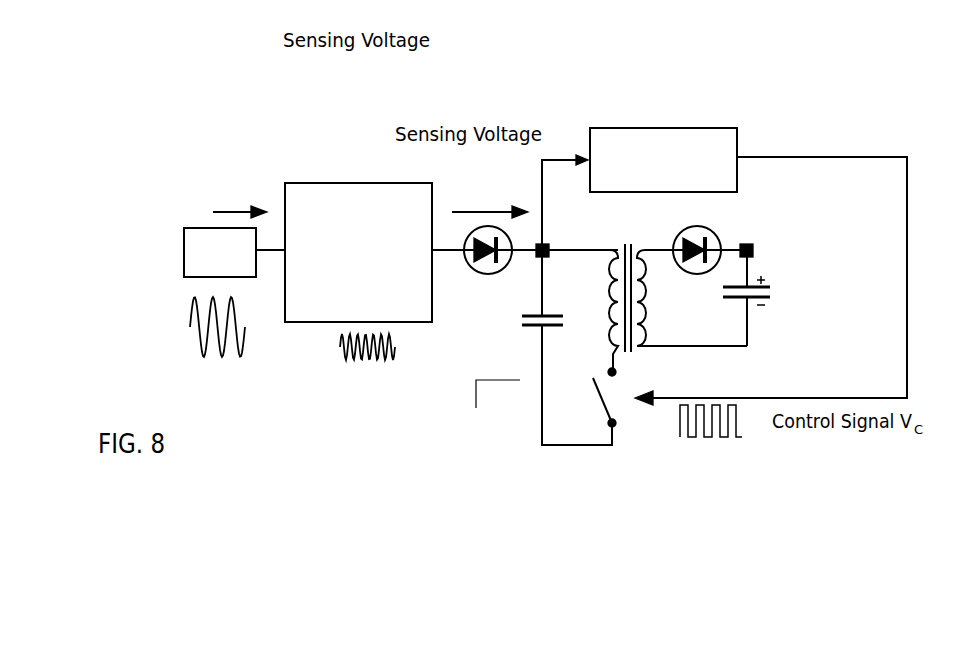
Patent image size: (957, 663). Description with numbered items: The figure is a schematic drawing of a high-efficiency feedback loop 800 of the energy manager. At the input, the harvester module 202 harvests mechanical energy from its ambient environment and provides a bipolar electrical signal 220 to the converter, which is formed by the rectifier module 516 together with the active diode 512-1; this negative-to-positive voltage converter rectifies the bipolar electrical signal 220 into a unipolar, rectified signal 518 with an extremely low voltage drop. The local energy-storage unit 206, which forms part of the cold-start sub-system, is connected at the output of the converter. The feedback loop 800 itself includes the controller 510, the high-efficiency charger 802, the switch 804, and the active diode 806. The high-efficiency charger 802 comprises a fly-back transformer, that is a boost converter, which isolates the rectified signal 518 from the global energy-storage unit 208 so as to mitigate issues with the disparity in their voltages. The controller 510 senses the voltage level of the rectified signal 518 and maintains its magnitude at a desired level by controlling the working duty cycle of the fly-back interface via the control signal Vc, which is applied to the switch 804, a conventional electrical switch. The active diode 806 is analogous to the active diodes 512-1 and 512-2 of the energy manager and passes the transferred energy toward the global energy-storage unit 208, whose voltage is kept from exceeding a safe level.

The feedback loop 800 is at (170, 106).
The harvester module 202 is at (237, 264).
The bipolar electrical signal 220 is at (240, 199).
The rectifier module 516 is at (374, 267).
The unipolar electrical signal 518 is at (490, 198).
The active diode 512-1 is at (486, 264).
The controller 510 is at (680, 164).
The local energy-storage unit 206 is at (528, 330).
The high-efficiency charger 802 is at (622, 248).
The switch 804 is at (615, 394).
The active diode 806 is at (720, 298).
The global energy-storage unit 208 is at (772, 317).
The active diode 512-2 is at (697, 250).